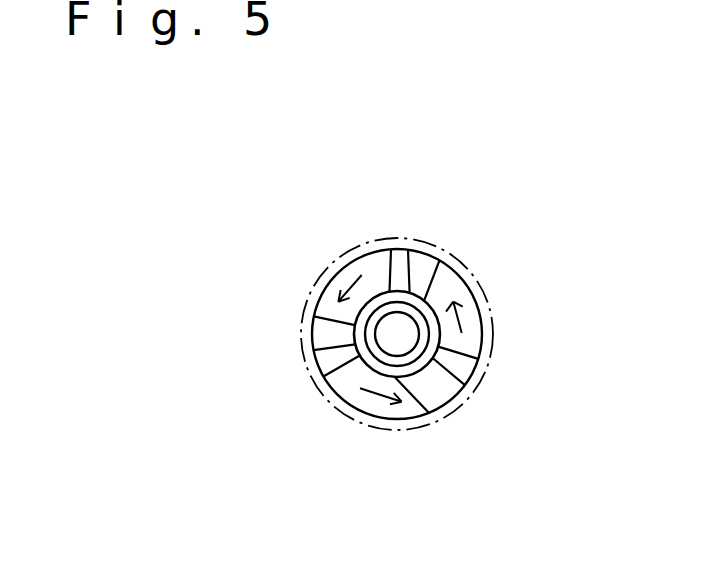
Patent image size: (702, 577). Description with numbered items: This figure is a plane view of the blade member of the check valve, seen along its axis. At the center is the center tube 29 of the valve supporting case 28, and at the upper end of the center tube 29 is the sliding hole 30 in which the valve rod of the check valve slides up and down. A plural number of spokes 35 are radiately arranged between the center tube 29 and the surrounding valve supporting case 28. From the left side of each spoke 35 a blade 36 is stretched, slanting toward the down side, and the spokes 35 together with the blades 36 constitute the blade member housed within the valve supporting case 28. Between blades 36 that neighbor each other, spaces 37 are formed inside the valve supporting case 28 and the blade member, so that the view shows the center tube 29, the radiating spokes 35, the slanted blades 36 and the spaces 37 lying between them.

The valve supporting case 28 is at (360, 420).
The center tube 29 is at (447, 264).
The sliding hole 30 is at (387, 313).
The spoke 35 is at (399, 257).
The blade 36 is at (347, 265).
The space 37 is at (432, 258).